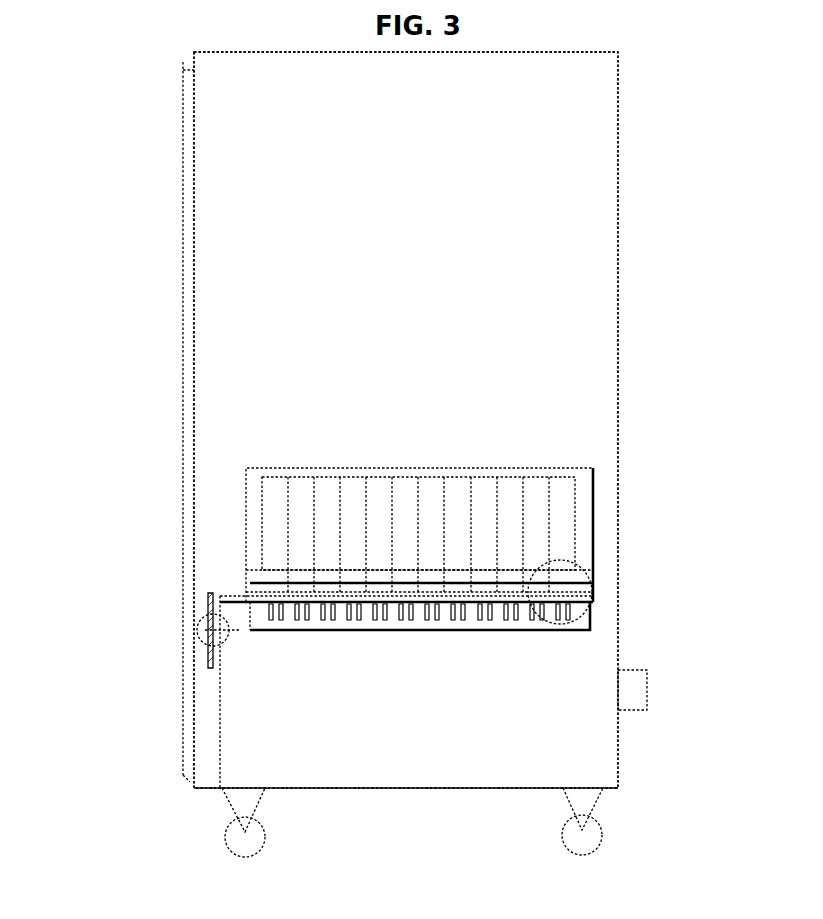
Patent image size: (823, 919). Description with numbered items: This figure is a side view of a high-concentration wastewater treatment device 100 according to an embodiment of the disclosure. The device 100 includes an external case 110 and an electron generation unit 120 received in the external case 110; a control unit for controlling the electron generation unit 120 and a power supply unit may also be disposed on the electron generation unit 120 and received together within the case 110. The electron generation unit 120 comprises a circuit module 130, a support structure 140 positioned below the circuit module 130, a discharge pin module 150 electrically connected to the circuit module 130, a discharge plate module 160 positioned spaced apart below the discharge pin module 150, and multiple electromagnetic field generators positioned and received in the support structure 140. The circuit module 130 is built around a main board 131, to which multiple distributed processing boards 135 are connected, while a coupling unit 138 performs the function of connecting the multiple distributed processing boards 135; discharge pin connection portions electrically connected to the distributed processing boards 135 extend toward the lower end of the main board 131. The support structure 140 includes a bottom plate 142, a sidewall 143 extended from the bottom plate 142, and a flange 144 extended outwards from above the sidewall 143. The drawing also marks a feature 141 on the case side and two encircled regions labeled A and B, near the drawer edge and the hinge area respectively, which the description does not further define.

The high-concentration wastewater treatment device 100 is at (622, 126).
The external case 110 is at (610, 322).
The electron generation unit 120 is at (603, 528).
The circuit module 130 is at (258, 498).
The main board 131 is at (250, 583).
The distributed processing boards 135 is at (277, 577).
The coupling unit 138 is at (565, 495).
The support structure 140 is at (496, 792).
The door 141 is at (185, 745).
The bottom plate 142 is at (360, 790).
The sidewall 143 is at (618, 642).
The flange 144 is at (212, 598).
The discharge pin module 150 is at (325, 637).
The discharge plate module 160 is at (487, 634).
The detail A is at (597, 597).
The detail B is at (205, 633).